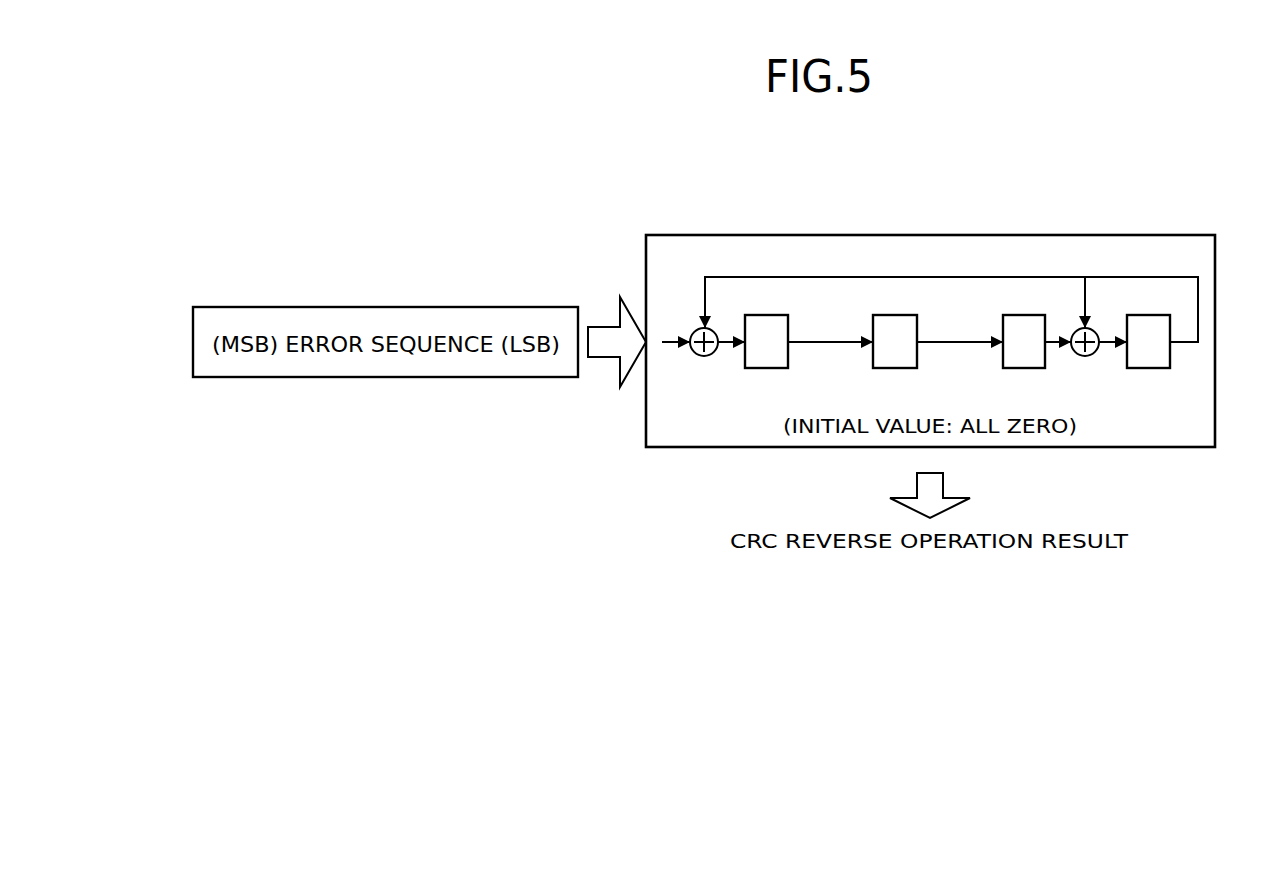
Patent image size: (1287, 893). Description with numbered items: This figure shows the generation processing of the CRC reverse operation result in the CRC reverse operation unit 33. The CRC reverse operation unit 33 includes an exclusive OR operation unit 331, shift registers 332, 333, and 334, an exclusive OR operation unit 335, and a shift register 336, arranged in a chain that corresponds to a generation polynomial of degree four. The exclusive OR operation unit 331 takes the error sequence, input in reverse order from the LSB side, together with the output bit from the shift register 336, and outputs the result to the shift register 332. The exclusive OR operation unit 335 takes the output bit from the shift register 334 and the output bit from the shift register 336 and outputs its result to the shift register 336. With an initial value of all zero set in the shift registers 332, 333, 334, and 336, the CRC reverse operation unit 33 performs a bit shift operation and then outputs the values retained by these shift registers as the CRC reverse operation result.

The CRC reverse operation unit 33 is at (1141, 212).
The exclusive OR operation unit 331 is at (703, 357).
The shift register 332 is at (775, 295).
The shift register 333 is at (894, 314).
The shift register 334 is at (1016, 314).
The exclusive OR operation unit 335 is at (1084, 357).
The shift register 336 is at (1148, 295).